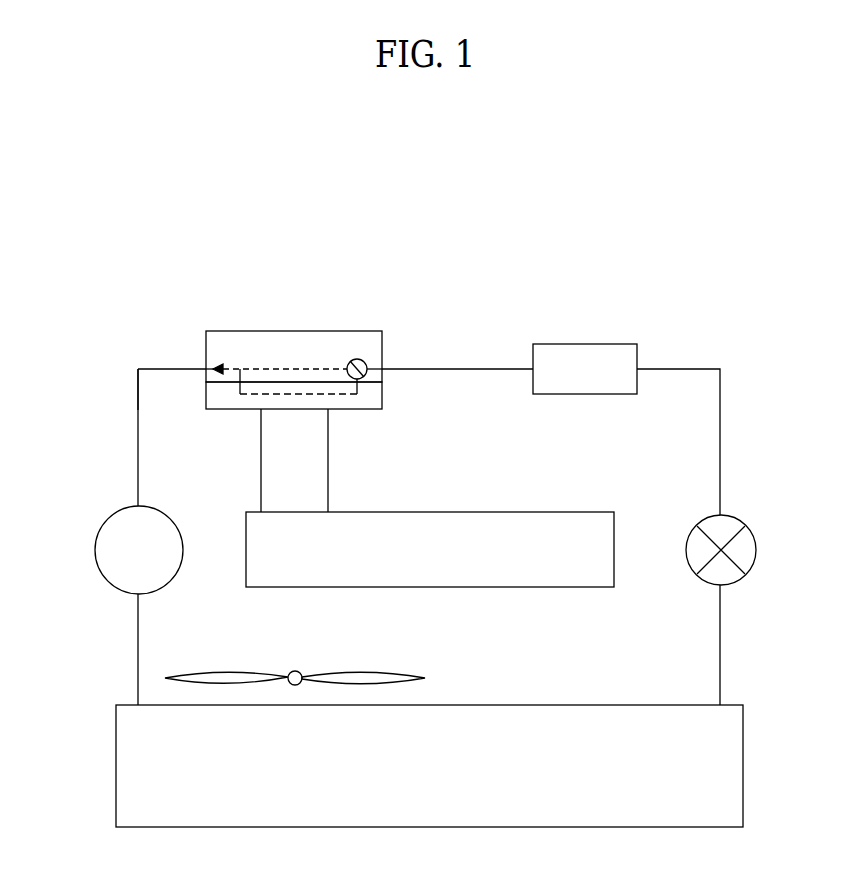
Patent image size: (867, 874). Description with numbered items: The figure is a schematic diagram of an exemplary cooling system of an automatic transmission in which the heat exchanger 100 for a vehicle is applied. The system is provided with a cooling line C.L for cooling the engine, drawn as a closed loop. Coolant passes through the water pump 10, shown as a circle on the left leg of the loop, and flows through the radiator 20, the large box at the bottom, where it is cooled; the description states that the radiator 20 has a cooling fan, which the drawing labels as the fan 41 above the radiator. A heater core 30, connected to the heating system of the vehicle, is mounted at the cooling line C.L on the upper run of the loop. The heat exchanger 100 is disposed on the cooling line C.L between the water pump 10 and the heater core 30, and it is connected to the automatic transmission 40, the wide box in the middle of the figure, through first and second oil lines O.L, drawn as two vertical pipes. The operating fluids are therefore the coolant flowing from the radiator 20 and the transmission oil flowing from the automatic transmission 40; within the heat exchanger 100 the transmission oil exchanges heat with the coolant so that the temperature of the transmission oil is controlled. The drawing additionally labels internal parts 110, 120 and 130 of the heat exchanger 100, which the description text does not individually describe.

The heat exchanger 100 is at (304, 322).
The separator housing 110 is at (354, 342).
The oil reservoir 120 is at (218, 401).
The sensor 130 is at (366, 359).
The water pump 10 is at (103, 522).
The radiator 20 is at (116, 762).
The heater core 30 is at (583, 344).
The automatic transmission 40 is at (483, 512).
The fan 41 is at (297, 671).
The cooling line C.L is at (137, 437).
The oil lines O.L is at (262, 432).